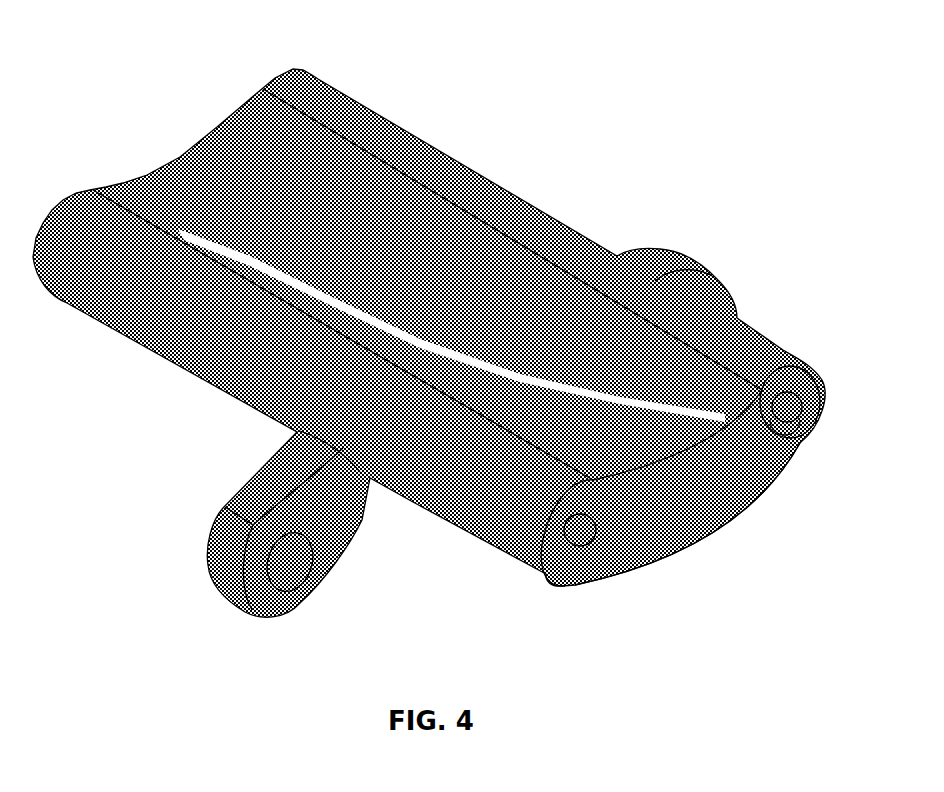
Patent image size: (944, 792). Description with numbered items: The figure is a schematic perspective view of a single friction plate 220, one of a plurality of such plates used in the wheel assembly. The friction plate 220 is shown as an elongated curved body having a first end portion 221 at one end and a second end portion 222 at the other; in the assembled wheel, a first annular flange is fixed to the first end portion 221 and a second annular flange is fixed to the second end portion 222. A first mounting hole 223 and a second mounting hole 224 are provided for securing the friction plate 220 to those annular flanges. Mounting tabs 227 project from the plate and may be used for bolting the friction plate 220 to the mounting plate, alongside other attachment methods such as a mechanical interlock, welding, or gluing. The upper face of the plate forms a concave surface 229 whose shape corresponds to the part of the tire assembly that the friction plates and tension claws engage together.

The friction plate 220 is at (447, 337).
The first end portion 221 is at (701, 440).
The second end portion 222 is at (416, 107).
The first mounting hole 223 is at (580, 523).
The second mounting hole 224 is at (787, 412).
The mounting tab 227 is at (663, 273).
The concave surface 229 is at (224, 207).